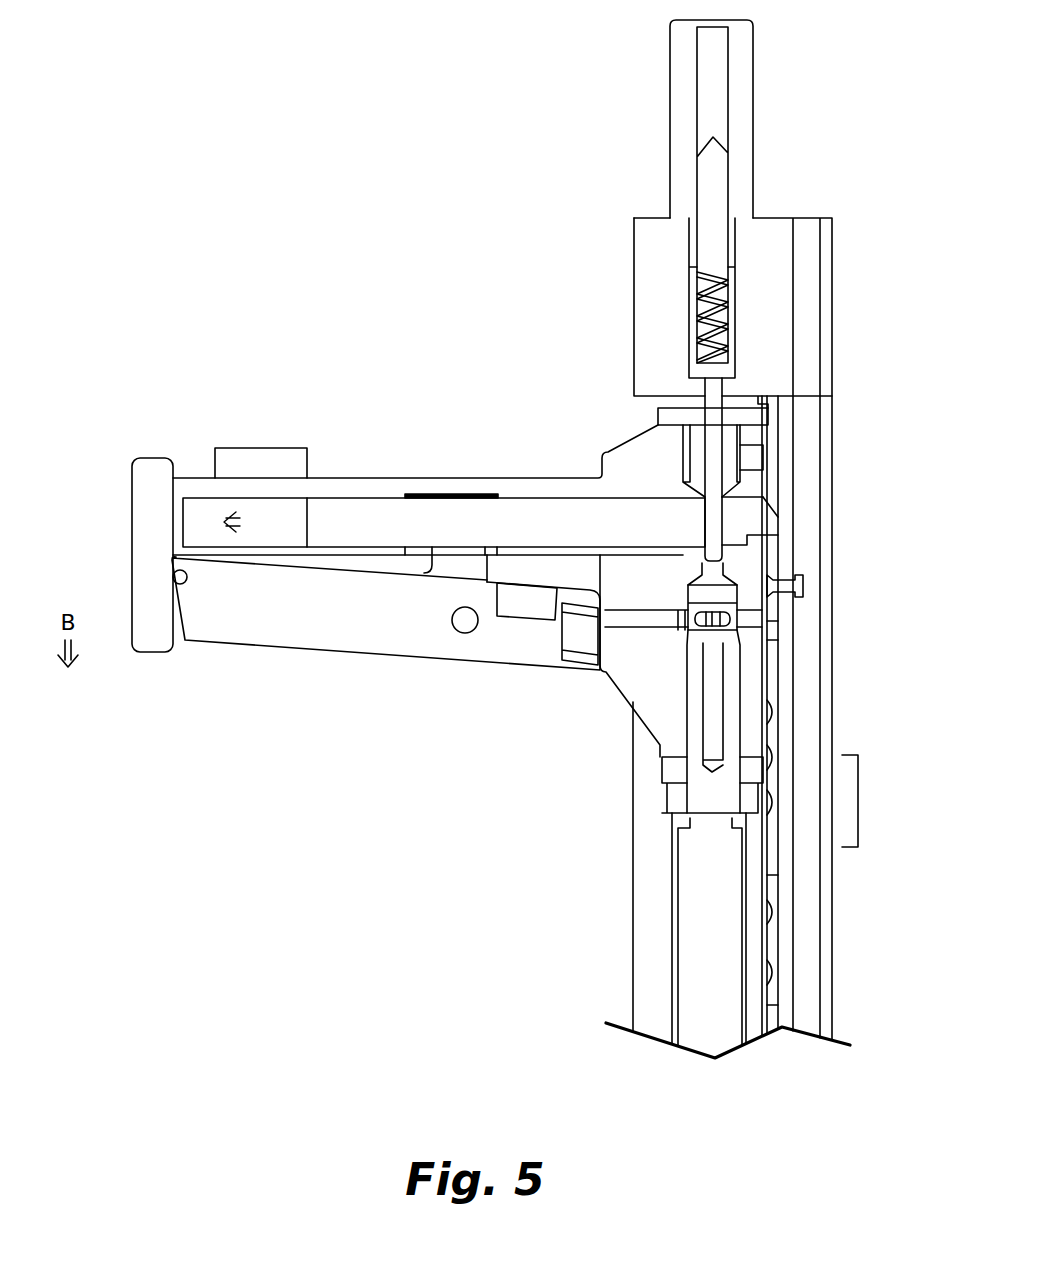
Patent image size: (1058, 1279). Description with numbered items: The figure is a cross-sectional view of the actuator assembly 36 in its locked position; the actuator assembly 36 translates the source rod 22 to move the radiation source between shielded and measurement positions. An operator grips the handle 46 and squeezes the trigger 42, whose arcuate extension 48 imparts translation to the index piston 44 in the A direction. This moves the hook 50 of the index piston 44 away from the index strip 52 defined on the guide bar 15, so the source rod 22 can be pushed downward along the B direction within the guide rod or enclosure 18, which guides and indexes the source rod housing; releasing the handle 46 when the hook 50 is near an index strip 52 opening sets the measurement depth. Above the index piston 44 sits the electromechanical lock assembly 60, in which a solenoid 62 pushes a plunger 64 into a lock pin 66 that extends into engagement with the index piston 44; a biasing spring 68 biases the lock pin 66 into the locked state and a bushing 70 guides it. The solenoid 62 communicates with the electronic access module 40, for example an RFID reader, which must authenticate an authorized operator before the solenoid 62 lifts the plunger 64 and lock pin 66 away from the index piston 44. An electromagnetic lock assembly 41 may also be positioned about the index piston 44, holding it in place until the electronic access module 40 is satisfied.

The electromechanical lock assembly 60 is at (850, 183).
The solenoid 62 is at (686, 90).
The plunger 64 is at (716, 168).
The biasing spring 68 is at (706, 291).
The guide rod or enclosure 18 is at (835, 410).
The bushing 70 is at (666, 418).
The lock pin 66 is at (706, 527).
The guide bar 15 is at (776, 497).
The hook 50 is at (778, 527).
The index strip 52 is at (776, 923).
The source rod 22 is at (708, 979).
The electronic access module 40 is at (860, 803).
The actuator assembly 36 is at (438, 328).
The handle 46 is at (160, 497).
The electromagnetic lock assembly 41 is at (258, 443).
The index piston 44 is at (349, 533).
The trigger 42 is at (342, 623).
The extension 48 is at (452, 576).